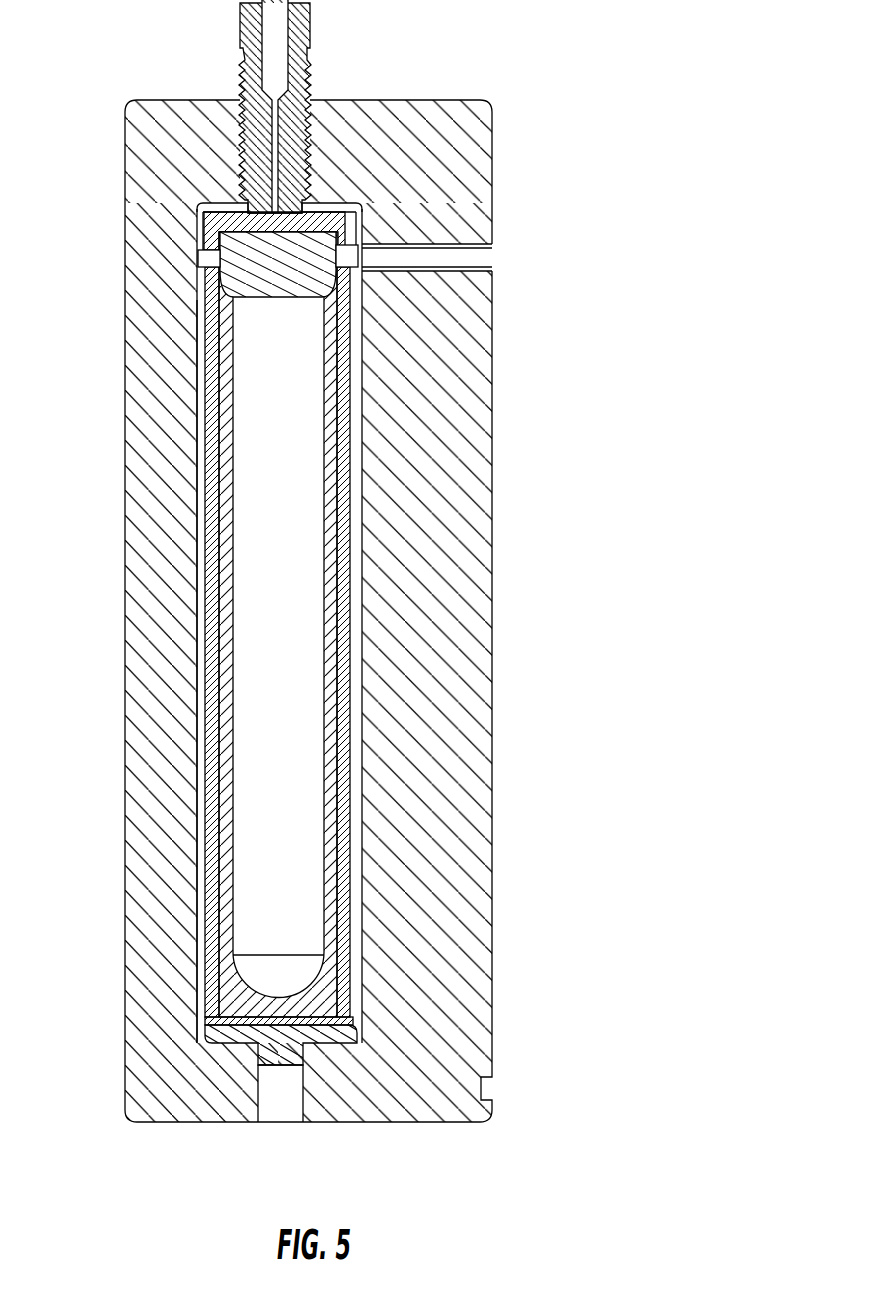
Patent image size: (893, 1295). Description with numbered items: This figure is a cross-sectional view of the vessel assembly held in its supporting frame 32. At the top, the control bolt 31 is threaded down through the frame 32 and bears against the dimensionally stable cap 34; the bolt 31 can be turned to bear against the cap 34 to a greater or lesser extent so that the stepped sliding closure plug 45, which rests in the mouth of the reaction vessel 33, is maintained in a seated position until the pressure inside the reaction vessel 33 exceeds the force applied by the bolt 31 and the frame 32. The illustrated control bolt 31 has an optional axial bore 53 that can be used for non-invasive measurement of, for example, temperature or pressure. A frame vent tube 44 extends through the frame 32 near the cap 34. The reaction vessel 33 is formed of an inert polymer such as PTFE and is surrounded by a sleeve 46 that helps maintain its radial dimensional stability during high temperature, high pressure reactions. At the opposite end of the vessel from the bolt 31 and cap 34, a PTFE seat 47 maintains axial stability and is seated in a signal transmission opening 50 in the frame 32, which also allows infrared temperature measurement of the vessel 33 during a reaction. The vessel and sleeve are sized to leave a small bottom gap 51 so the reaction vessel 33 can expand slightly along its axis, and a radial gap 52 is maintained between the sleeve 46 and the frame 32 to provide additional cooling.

The control bolt 31 is at (314, 26).
The axial bore 53 is at (273, 42).
The frame 32 is at (467, 127).
The dimensionally stable cap 34 is at (364, 217).
The frame vent tube 44 is at (493, 268).
The stepped sliding closure plug 45 is at (336, 292).
The reaction vessel 33 is at (325, 612).
The sleeve 46 is at (358, 731).
The radial gap 52 is at (203, 940).
The bottom gap 51 is at (207, 1018).
The PTFE seat 47 is at (368, 1043).
The signal transmission opening 50 is at (282, 1126).